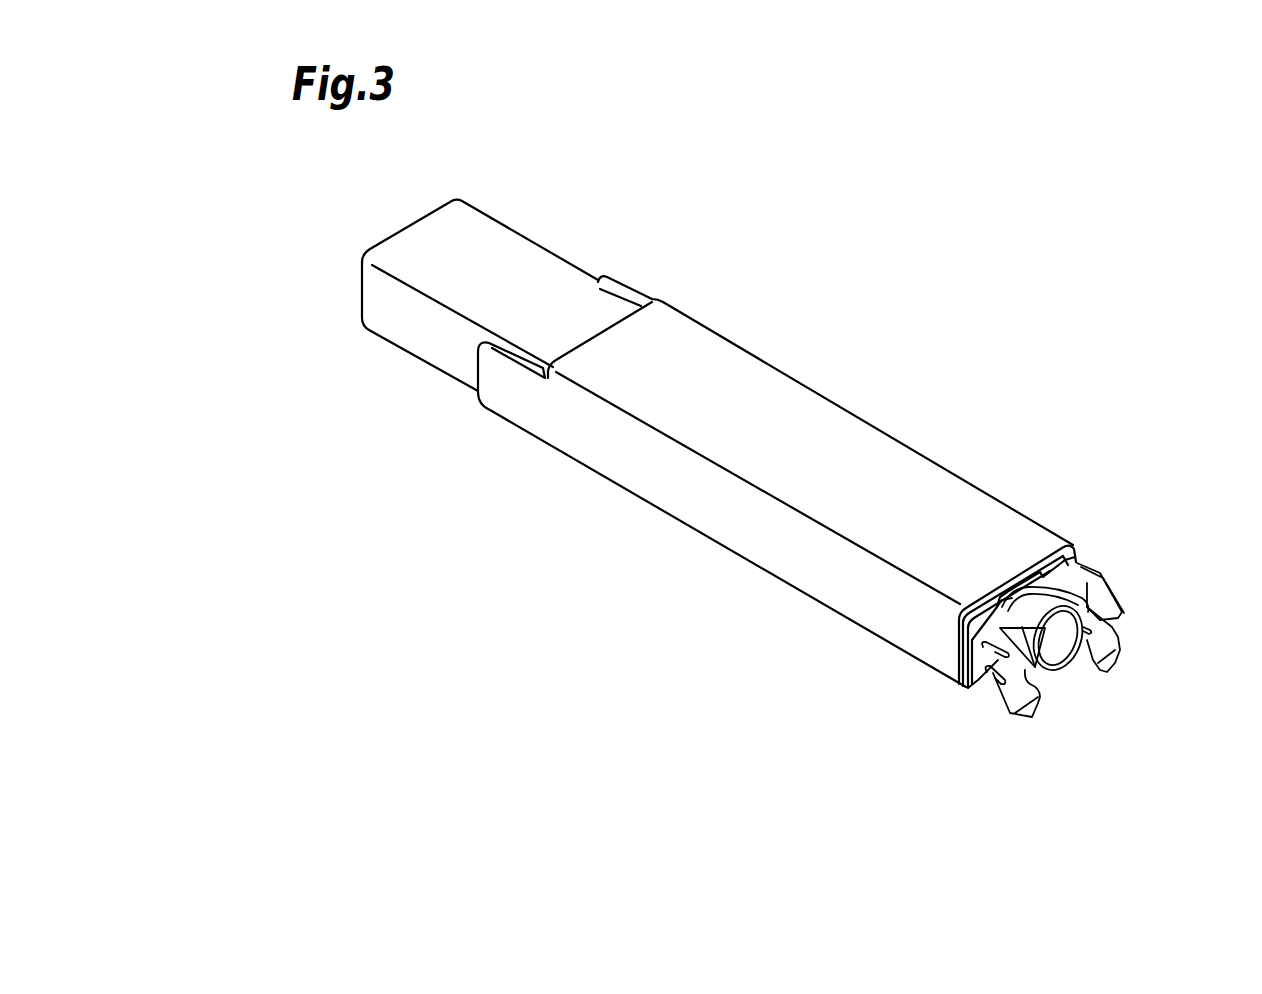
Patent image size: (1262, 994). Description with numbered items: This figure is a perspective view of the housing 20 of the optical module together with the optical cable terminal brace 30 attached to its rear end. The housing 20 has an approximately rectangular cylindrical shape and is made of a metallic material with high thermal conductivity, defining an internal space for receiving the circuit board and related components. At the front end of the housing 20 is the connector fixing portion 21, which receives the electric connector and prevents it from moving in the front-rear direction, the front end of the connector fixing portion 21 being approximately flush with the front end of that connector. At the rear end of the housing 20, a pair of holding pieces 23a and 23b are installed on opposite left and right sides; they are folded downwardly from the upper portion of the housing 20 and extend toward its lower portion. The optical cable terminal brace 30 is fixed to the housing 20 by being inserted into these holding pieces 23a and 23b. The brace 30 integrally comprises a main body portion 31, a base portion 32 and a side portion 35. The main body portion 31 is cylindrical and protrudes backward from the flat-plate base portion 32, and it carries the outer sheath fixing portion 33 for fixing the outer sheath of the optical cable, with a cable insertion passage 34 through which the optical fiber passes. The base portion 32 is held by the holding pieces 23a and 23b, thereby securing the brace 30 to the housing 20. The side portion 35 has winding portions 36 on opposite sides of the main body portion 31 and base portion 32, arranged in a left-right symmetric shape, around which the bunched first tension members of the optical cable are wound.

The housing 20 is at (742, 374).
The connector fixing portion 21 is at (512, 258).
The holding piece 23a is at (1088, 573).
The holding piece 23b is at (998, 662).
The optical cable terminal brace 30 is at (1088, 617).
The main body portion 31 is at (1057, 674).
The base portion 32 is at (1035, 575).
The outer sheath fixing portion 33 is at (1026, 592).
The cable insertion passage 34 is at (1062, 647).
The side portion 35 is at (1005, 710).
The winding portion 36 is at (997, 682).